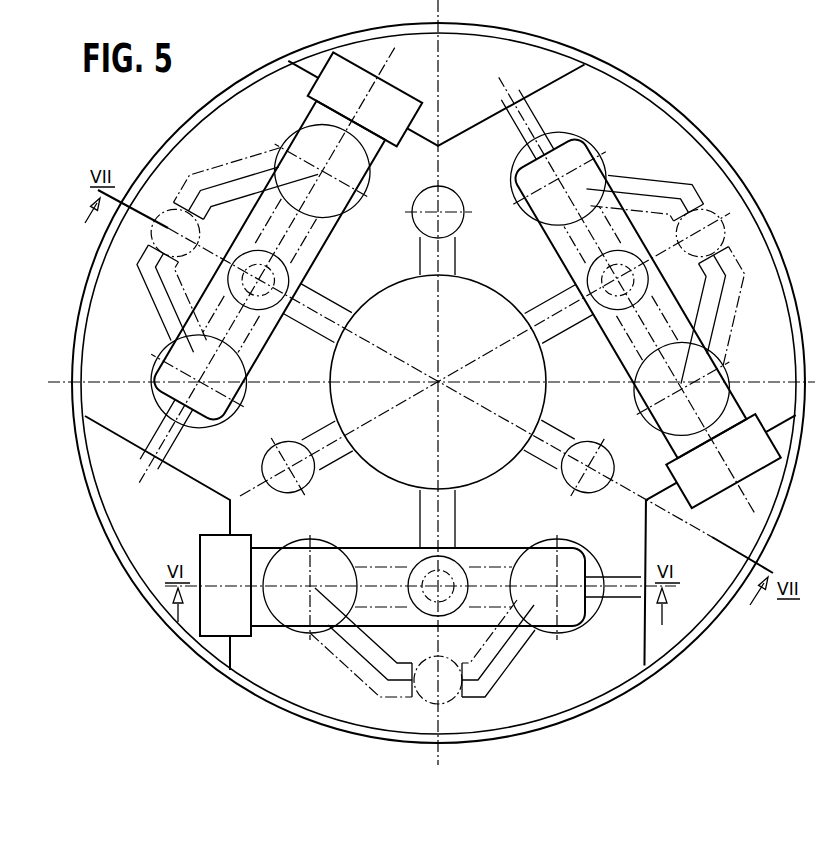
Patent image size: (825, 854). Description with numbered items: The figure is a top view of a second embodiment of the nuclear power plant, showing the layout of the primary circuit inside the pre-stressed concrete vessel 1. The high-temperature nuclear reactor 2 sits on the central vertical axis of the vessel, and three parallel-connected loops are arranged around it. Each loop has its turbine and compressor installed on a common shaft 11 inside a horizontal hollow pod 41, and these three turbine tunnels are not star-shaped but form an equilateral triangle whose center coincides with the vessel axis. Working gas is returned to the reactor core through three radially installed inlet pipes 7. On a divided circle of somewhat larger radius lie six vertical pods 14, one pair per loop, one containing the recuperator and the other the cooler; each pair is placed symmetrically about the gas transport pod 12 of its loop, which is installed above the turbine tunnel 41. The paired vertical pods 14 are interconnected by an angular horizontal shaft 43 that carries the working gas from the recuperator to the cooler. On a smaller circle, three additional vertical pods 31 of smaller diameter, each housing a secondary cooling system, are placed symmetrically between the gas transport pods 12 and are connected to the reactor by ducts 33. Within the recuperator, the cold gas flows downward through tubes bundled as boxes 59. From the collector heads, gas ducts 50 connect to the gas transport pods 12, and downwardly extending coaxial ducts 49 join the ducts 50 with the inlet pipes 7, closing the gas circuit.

The pre-stressed concrete vessel 1 is at (653, 131).
The nuclear reactor 2 is at (476, 420).
The inlet pipe 7 is at (438, 412).
The common shaft 11 is at (390, 362).
The gas transport pod 12 is at (459, 451).
The vertical pod 14 is at (457, 372).
The additional vertical pod 31 is at (454, 342).
The duct 33 is at (455, 369).
The horizontal hollow pod 41 is at (448, 363).
The angular horizontal shaft 43 is at (446, 406).
The coaxial duct 49 is at (438, 419).
The gas duct 50 is at (440, 403).
The box 59 is at (297, 258).